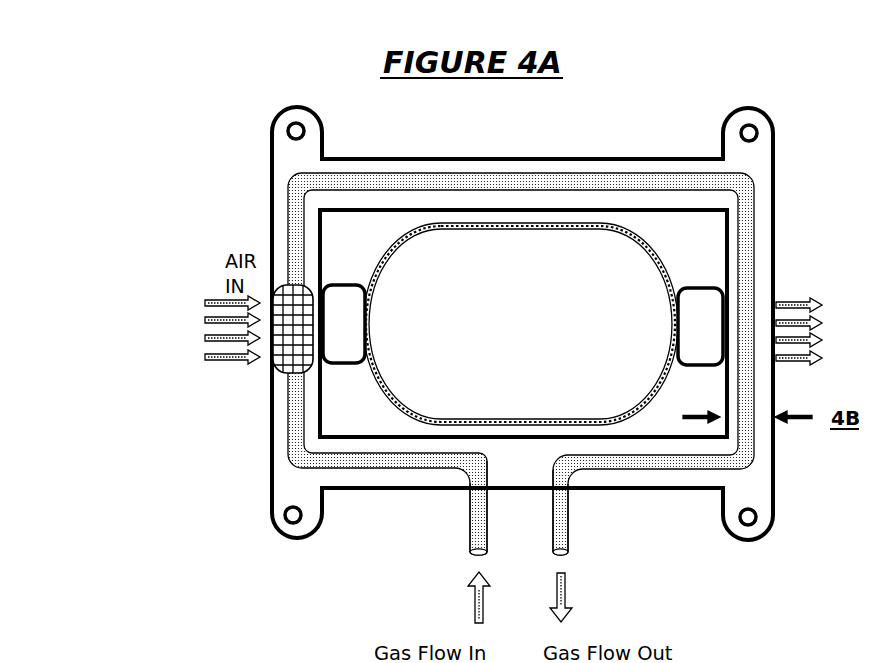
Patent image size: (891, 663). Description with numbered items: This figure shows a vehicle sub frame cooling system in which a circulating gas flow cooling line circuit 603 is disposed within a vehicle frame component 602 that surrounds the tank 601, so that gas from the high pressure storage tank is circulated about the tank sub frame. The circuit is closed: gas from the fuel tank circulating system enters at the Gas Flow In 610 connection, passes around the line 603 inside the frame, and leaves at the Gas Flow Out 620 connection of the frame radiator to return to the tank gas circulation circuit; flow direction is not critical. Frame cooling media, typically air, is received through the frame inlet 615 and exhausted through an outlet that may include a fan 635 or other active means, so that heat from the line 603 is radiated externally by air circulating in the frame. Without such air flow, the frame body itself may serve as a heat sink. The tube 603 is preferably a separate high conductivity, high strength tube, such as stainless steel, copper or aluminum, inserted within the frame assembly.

The tank 601 is at (521, 423).
The vehicle frame component 602 is at (648, 157).
The circulating gas flow cooling line circuit 603 is at (629, 472).
The gas flow in 610 is at (470, 535).
The gas flow out 620 is at (567, 535).
The frame inlet 615 is at (290, 363).
The fan 635 is at (775, 290).